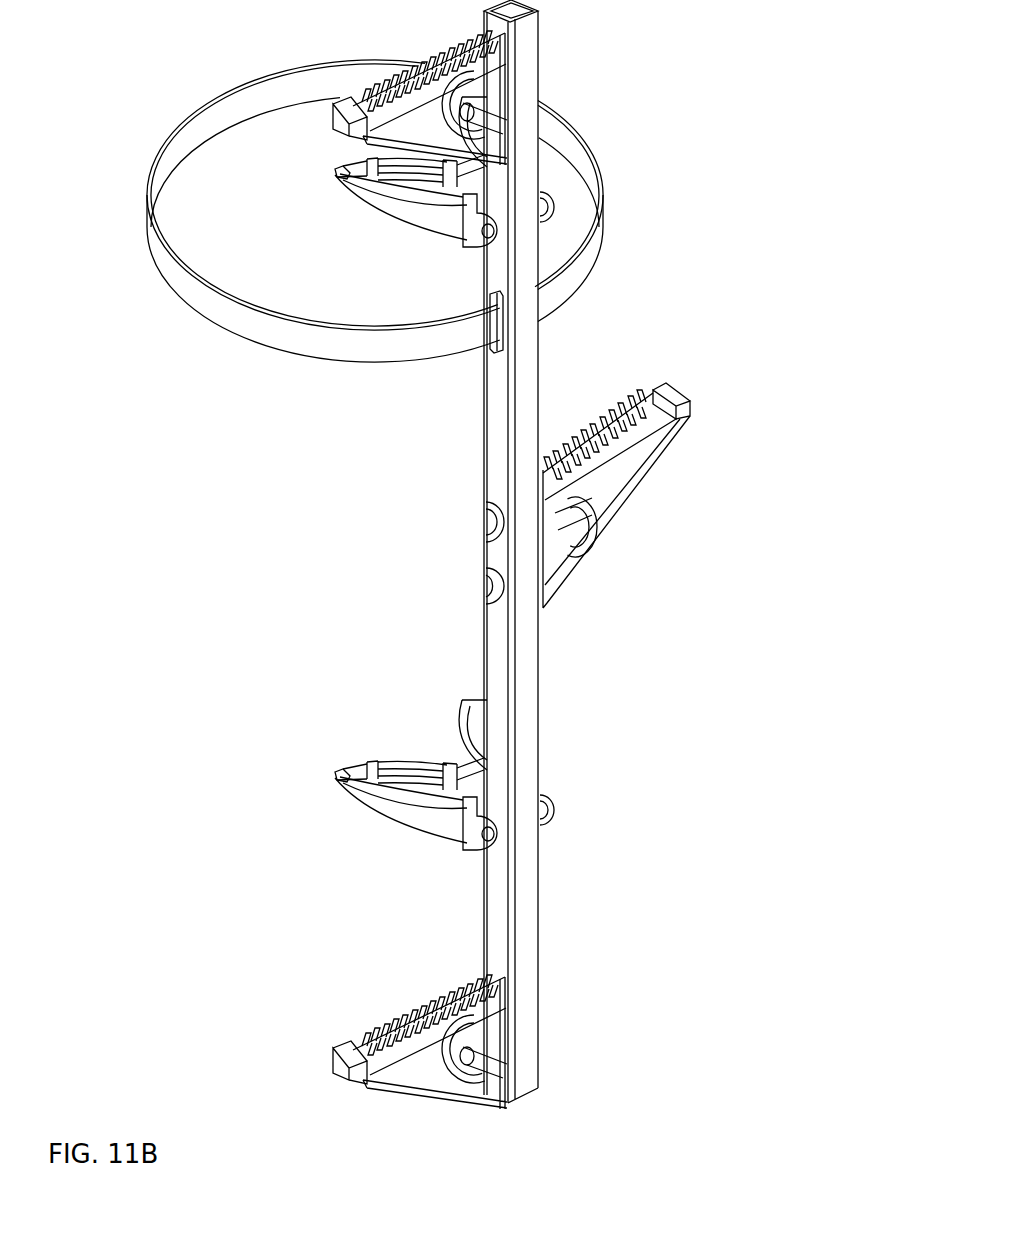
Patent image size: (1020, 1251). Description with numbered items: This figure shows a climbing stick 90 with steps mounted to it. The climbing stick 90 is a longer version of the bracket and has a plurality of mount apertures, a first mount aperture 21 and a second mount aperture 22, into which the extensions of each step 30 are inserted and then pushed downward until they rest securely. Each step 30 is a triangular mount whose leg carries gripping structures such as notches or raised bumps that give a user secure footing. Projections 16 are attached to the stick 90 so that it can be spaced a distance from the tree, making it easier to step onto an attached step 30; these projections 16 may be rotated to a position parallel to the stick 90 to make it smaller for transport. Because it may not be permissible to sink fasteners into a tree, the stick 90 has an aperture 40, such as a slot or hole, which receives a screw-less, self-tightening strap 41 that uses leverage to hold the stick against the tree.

The projection 16 is at (340, 176).
The first mount aperture 21 is at (500, 525).
The second mount aperture 22 is at (500, 588).
The step 30 is at (358, 133).
The aperture 40 is at (493, 298).
The strap 41 is at (583, 258).
The climbing stick 90 is at (488, 405).